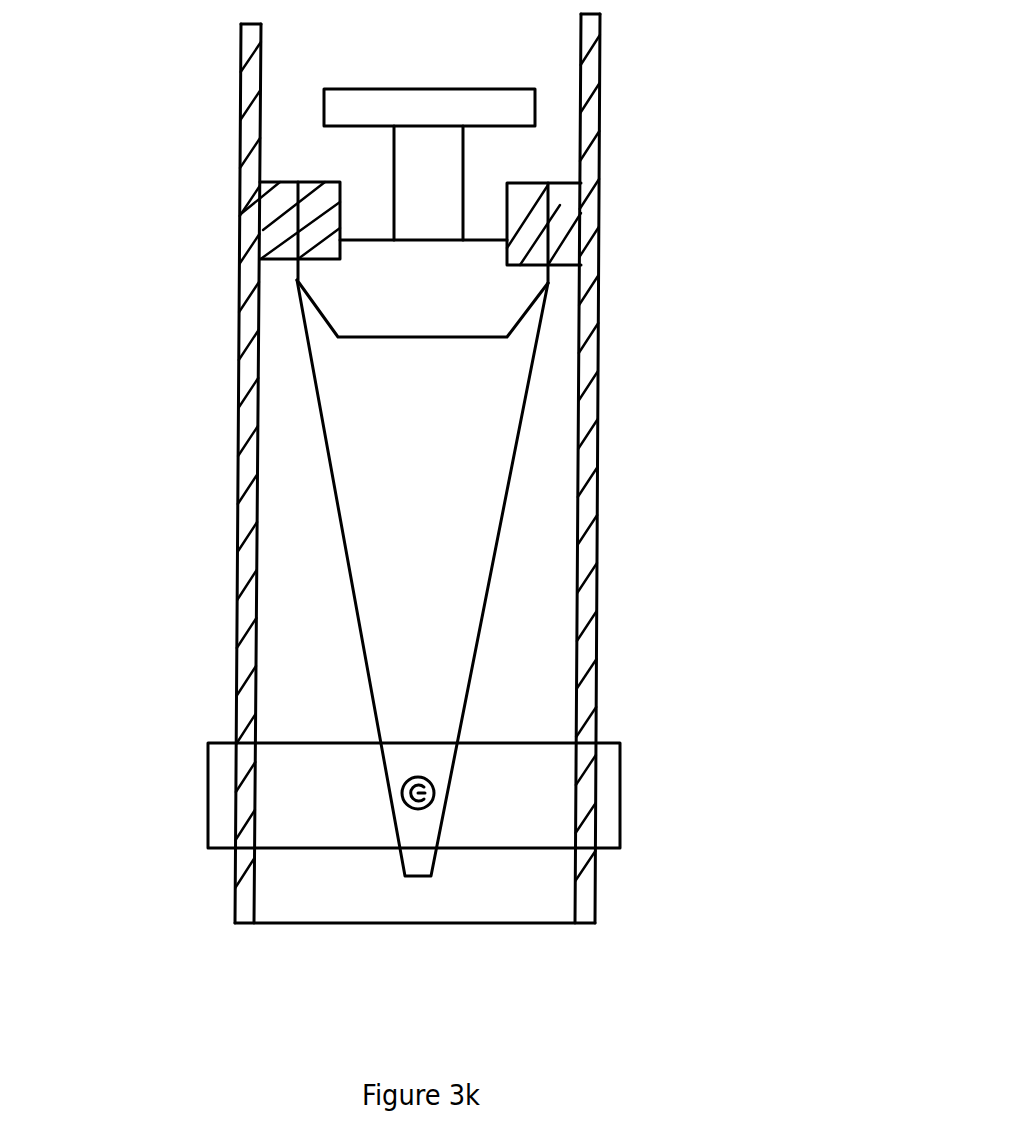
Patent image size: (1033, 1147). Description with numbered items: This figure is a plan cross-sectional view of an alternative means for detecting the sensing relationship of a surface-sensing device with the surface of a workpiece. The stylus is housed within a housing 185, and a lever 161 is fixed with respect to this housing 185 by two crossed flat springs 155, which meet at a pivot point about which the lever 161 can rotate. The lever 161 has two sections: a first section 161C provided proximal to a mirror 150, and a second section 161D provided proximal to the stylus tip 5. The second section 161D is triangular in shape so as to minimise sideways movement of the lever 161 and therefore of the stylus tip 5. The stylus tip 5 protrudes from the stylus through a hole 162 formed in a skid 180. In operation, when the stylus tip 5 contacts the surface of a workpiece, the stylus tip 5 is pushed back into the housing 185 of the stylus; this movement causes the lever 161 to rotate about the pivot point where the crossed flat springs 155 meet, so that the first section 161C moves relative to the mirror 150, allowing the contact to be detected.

The mirror 150 is at (530, 110).
The crossed flat springs 155 is at (372, 268).
The housing 185 is at (252, 240).
The lever 161 is at (597, 501).
The first section 161C is at (445, 207).
The second section 161D is at (491, 398).
The hole 162 is at (405, 783).
The stylus tip 5 is at (430, 790).
The skid 180 is at (605, 840).